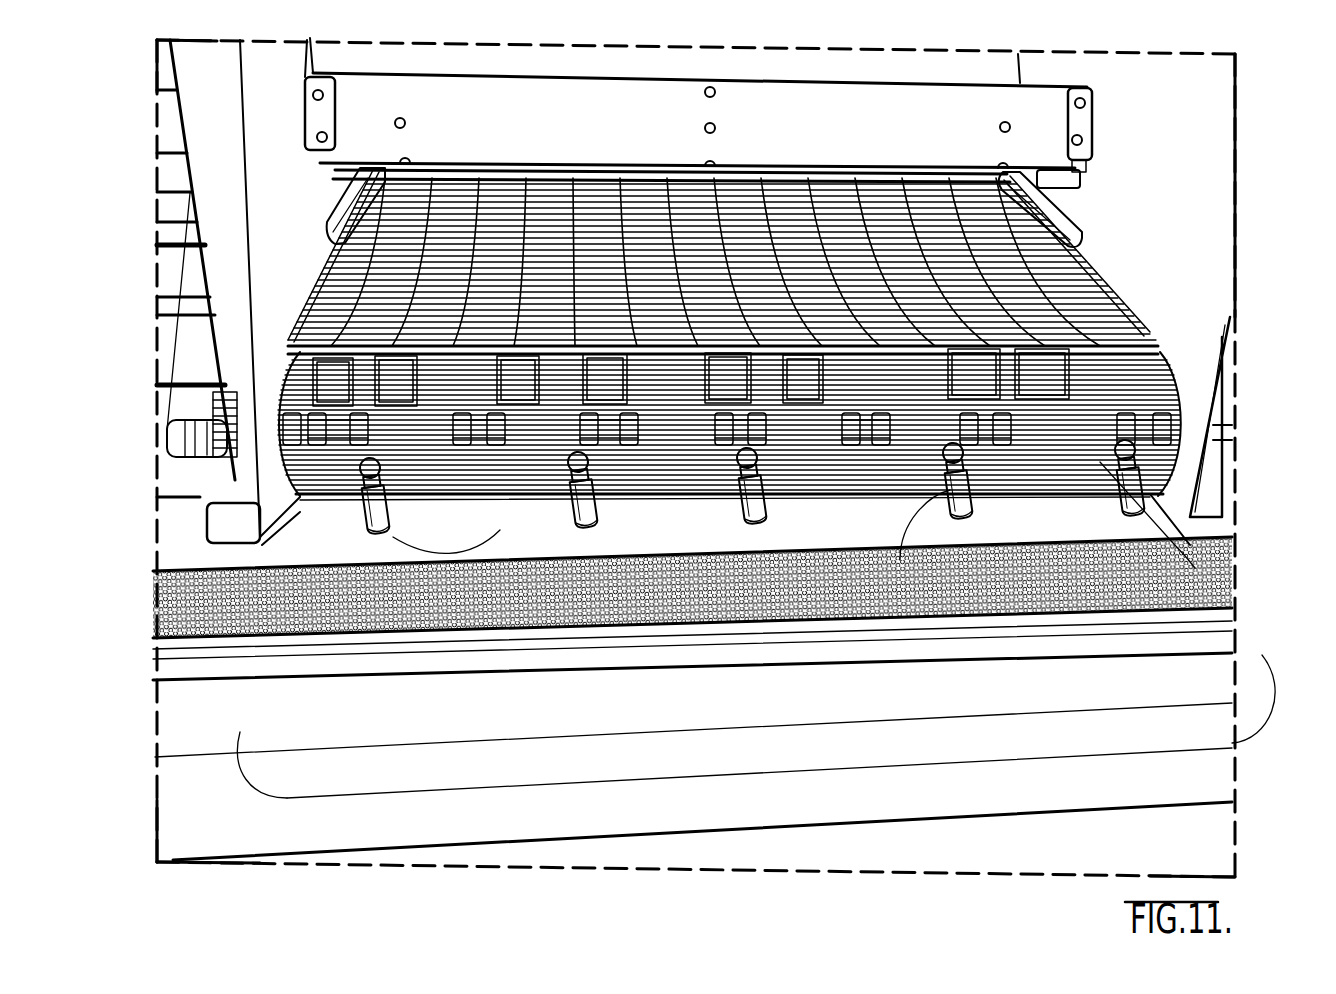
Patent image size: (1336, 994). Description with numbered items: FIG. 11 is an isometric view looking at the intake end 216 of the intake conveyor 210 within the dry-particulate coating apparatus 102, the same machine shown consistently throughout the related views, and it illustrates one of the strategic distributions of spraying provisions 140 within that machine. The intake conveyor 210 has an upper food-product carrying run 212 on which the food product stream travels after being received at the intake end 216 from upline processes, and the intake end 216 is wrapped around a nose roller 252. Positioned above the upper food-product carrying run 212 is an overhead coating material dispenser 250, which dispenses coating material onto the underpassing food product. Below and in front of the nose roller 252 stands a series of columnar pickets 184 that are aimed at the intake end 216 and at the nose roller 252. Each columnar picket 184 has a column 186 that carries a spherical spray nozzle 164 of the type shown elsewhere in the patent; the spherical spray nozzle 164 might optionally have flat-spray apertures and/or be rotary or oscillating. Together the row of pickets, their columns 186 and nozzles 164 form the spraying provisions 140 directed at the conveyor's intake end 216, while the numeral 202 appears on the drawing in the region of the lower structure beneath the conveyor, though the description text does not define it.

The dry-particulate coating apparatus 102 is at (213, 101).
The spraying provisions 140 is at (715, 691).
The spherical spray nozzle 164 is at (704, 458).
The columnar picket 184 is at (752, 775).
The column 186 is at (393, 537).
The perforated deck 202 is at (180, 662).
The intake conveyor 210 is at (831, 207).
The upper food-product carrying run 212 is at (1047, 222).
The intake end 216 is at (905, 330).
The overhead coating material dispenser 250 is at (972, 143).
The nose roller 252 is at (297, 433).